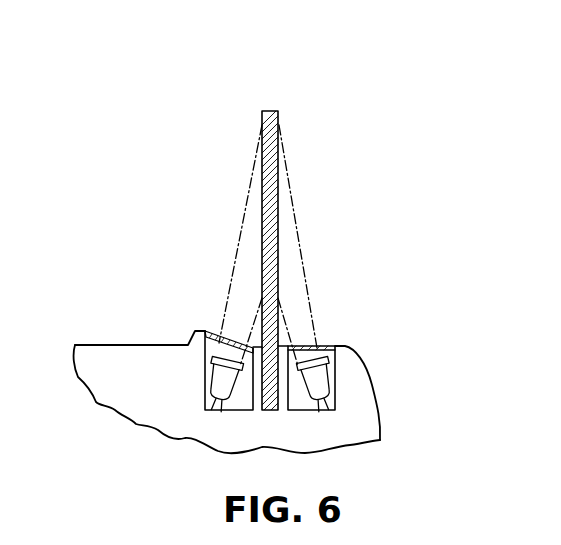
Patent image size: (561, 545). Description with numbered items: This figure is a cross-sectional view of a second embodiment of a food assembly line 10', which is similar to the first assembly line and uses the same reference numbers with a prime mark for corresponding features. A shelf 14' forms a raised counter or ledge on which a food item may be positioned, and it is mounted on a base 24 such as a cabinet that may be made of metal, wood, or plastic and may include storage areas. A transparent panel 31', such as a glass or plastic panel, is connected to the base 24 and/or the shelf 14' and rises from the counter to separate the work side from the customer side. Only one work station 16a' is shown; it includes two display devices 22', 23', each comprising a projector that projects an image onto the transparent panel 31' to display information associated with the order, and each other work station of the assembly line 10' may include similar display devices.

The food assembly line 10' is at (321, 264).
The shelf 14' is at (180, 312).
The work station 16a' is at (181, 245).
The display device 22' is at (195, 347).
The display device 23' is at (352, 346).
The base 24 is at (203, 426).
The transparent panel 31' is at (300, 232).